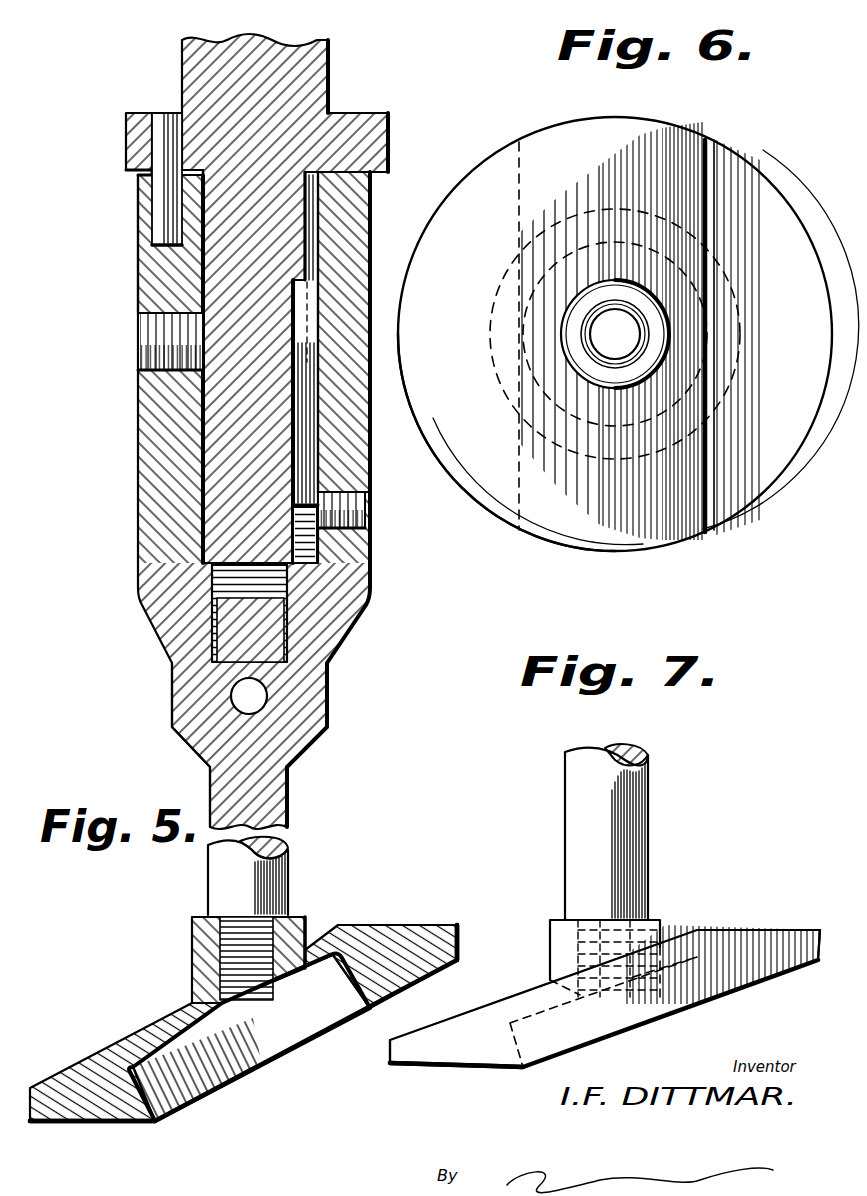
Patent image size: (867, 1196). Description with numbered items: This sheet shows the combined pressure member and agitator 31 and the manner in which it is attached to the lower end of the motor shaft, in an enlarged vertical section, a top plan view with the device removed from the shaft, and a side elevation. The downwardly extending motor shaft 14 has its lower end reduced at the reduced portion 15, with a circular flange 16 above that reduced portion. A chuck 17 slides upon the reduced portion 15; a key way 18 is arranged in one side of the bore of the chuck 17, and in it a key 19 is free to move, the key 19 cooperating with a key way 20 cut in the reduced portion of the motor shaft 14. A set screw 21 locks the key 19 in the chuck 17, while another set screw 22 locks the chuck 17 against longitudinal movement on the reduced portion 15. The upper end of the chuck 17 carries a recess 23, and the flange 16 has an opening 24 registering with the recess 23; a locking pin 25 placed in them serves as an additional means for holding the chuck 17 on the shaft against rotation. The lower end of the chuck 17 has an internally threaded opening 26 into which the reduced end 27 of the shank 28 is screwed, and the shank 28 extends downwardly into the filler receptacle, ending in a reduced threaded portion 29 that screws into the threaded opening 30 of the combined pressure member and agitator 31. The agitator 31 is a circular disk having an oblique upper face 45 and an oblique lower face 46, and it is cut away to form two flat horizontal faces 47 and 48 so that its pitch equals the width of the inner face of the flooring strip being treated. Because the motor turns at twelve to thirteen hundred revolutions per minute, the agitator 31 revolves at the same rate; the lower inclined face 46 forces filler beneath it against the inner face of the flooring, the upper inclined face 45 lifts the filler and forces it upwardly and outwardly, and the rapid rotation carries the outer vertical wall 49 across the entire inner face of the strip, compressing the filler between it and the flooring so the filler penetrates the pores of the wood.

In FIG. 5, the motor shaft 14 is at (305, 62).
In FIG. 5, the reduced portion 15 is at (285, 215).
In FIG. 5, the circular flange 16 is at (360, 130).
In FIG. 5, the chuck 17 is at (152, 482).
In FIG. 5, the key way 18 is at (320, 468).
In FIG. 5, the key 19 is at (313, 297).
In FIG. 5, the key way 20 is at (298, 395).
In FIG. 5, the set screw 21 is at (372, 510).
In FIG. 5, the set screw 22 is at (153, 328).
In FIG. 5, the recess 23 is at (157, 225).
In FIG. 5, the opening 24 is at (158, 133).
In FIG. 5, the locking pin 25 is at (162, 163).
In FIG. 5, the internally threaded opening 26 is at (288, 623).
In FIG. 5, the reduced end 27 is at (232, 640).
In FIG. 5, the shank 28 is at (307, 710).
In FIG. 5, the reduced threaded portion 29 is at (290, 846).
In FIG. 7, the reduced threaded portion 29 is at (622, 797).
In FIG. 5, the threaded opening 30 is at (200, 935).
In FIG. 7, the threaded opening 30 is at (645, 918).
In FIG. 5, the combined pressure member and agitator 31 is at (300, 957).
In FIG. 6, the combined pressure member and agitator 31 is at (751, 336).
In FIG. 7, the combined pressure member and agitator 31 is at (525, 1005).
In FIG. 5, the oblique upper face 45 is at (118, 1042).
In FIG. 6, the oblique upper face 45 is at (628, 334).
In FIG. 7, the oblique upper face 45 is at (452, 1020).
In FIG. 5, the oblique lower face 46 is at (267, 1070).
In FIG. 7, the oblique lower face 46 is at (695, 965).
In FIG. 5, the flat horizontal face 47 is at (397, 923).
In FIG. 6, the flat horizontal face 47 is at (743, 197).
In FIG. 7, the flat horizontal face 47 is at (733, 930).
In FIG. 5, the flat horizontal face 48 is at (100, 1128).
In FIG. 6, the flat horizontal face 48 is at (510, 508).
In FIG. 7, the flat horizontal face 48 is at (455, 1066).
In FIG. 5, the outer vertical wall 49 is at (460, 945).
In FIG. 7, the outer vertical wall 49 is at (390, 1053).